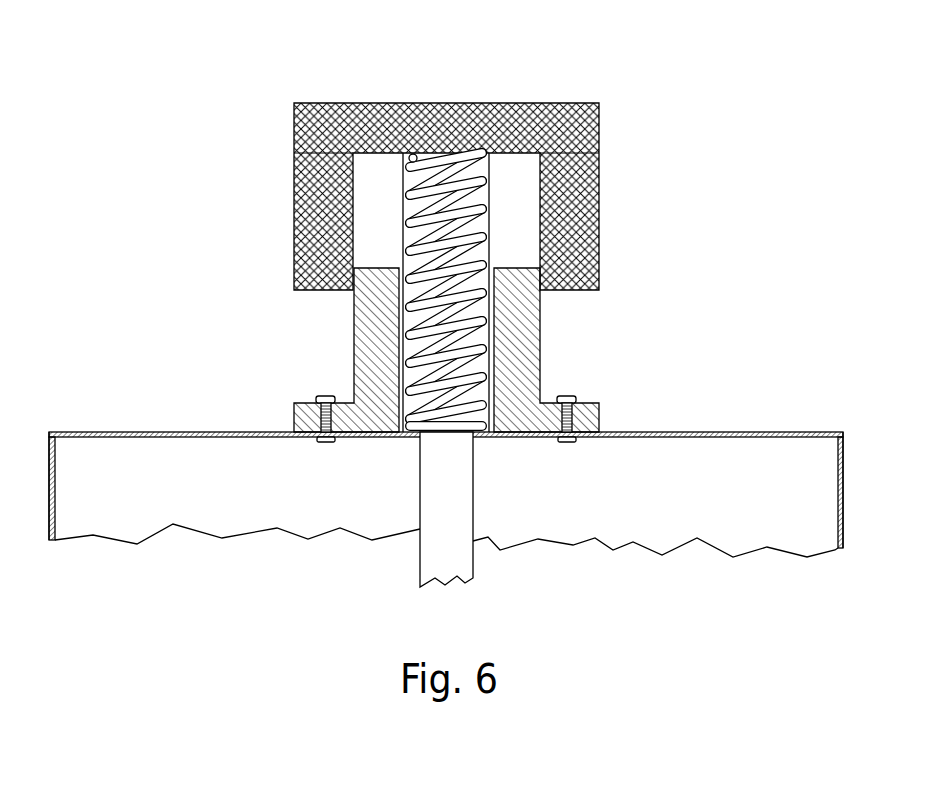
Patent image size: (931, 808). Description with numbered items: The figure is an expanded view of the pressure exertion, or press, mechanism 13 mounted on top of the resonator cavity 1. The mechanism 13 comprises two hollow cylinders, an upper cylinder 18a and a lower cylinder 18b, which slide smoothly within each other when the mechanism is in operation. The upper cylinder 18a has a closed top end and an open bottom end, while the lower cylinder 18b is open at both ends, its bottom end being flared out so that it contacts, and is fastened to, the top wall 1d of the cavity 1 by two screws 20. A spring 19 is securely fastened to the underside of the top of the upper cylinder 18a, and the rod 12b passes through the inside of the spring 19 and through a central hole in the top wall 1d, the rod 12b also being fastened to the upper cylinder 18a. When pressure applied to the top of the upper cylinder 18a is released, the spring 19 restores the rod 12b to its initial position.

The resonator cavity 1 is at (750, 462).
The top wall 1d is at (688, 432).
The rod 12b is at (432, 551).
The pressure exertion mechanism 13 is at (243, 100).
The upper cylinder 18a is at (582, 208).
The lower cylinder 18b is at (523, 353).
The spring 19 is at (490, 158).
The screws 20 is at (323, 397).